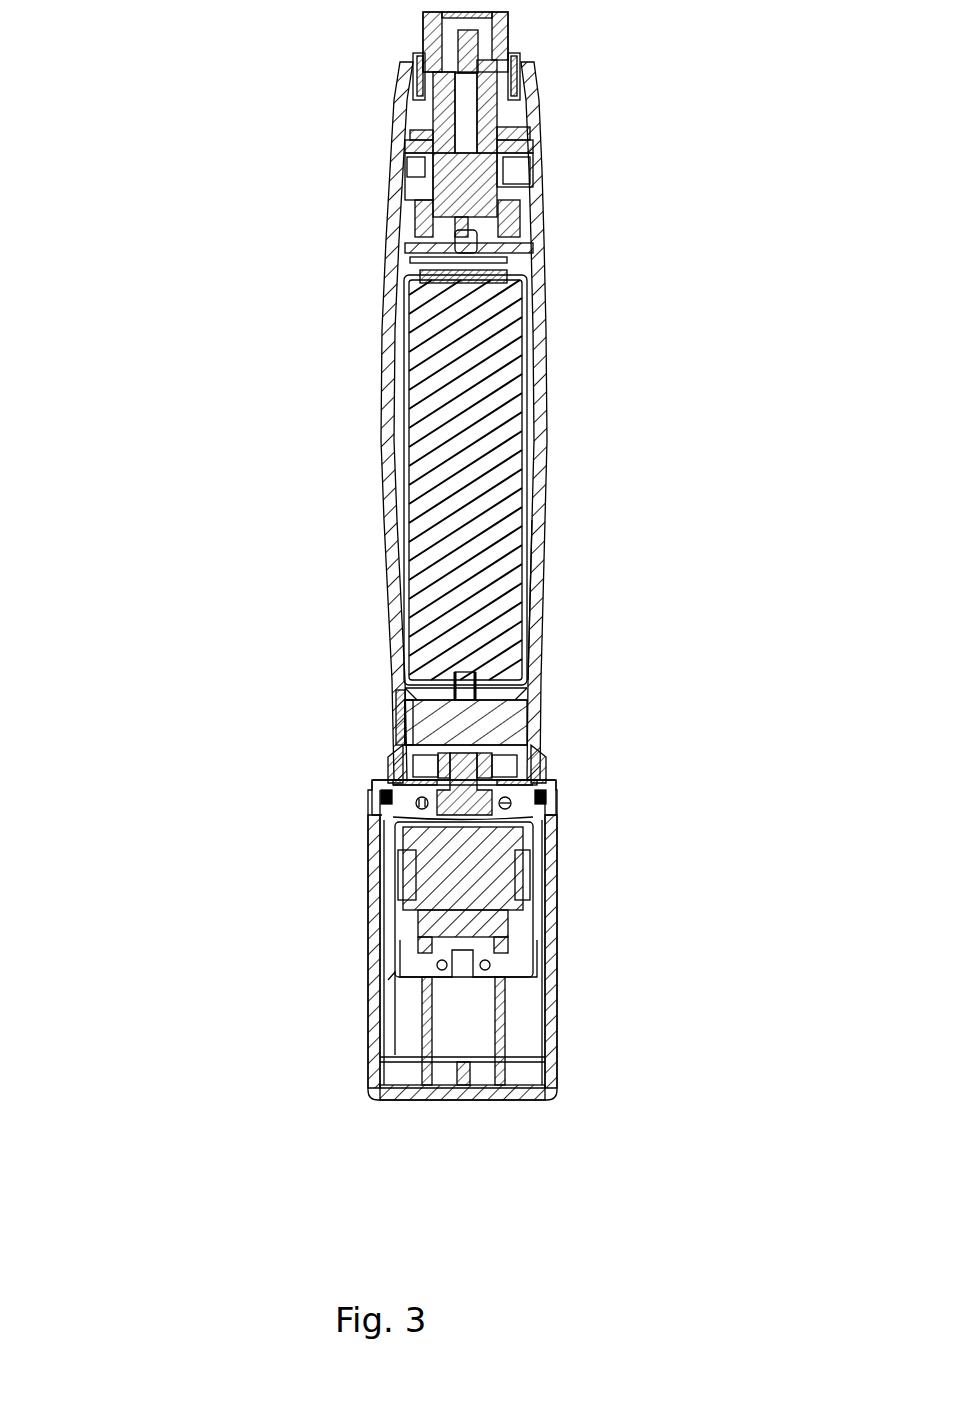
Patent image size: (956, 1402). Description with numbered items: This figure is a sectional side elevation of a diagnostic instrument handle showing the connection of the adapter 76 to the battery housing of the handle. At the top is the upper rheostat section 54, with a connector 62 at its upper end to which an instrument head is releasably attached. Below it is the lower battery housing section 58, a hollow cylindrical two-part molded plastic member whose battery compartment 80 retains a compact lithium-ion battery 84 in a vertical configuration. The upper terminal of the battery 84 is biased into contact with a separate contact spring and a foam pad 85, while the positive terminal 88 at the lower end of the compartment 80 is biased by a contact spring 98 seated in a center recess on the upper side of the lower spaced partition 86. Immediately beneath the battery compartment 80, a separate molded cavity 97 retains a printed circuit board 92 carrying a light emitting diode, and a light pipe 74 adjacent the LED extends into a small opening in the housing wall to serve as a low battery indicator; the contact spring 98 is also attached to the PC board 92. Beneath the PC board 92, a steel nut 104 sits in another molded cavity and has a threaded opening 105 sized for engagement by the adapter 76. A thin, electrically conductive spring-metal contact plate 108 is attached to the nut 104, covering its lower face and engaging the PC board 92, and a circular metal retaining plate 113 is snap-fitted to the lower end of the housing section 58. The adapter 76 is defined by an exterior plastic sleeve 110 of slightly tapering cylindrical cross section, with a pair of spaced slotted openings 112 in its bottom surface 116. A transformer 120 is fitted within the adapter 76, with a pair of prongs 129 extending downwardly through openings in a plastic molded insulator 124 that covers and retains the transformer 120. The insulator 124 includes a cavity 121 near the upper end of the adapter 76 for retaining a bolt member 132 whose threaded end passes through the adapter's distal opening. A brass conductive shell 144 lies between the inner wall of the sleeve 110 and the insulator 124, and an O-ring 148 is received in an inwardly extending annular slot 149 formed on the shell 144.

The connector 62 is at (505, 18).
The upper rheostat section 54 is at (543, 148).
The foam pad 85 is at (435, 278).
The battery 84 is at (437, 383).
The battery compartment 80 is at (400, 462).
The lower battery housing section 58 is at (546, 607).
The contact spring 98 is at (455, 682).
The positive terminal 88 is at (482, 678).
The printed circuit board 92 is at (530, 713).
The lower spaced partition 86 is at (400, 692).
The light pipe 74 is at (400, 720).
The molded cavity 97 is at (535, 743).
The circular metal retaining plate 113 is at (548, 768).
The threaded opening 105 is at (555, 782).
The steel nut 104 is at (415, 800).
The O-ring 148 is at (555, 797).
The annular slot 149 is at (555, 813).
The thin metal contact plate 108 is at (373, 805).
The cavity 121 is at (555, 830).
The bolt member 132 is at (400, 830).
The conductive shell 144 is at (400, 875).
The transformer 120 is at (545, 880).
The adapter 76 is at (373, 950).
The sleeve 110 is at (545, 962).
The plastic molded insulator 124 is at (398, 972).
The prongs 129 is at (505, 1013).
The bottom surface 116 is at (368, 1098).
The slotted openings 112 is at (432, 1100).